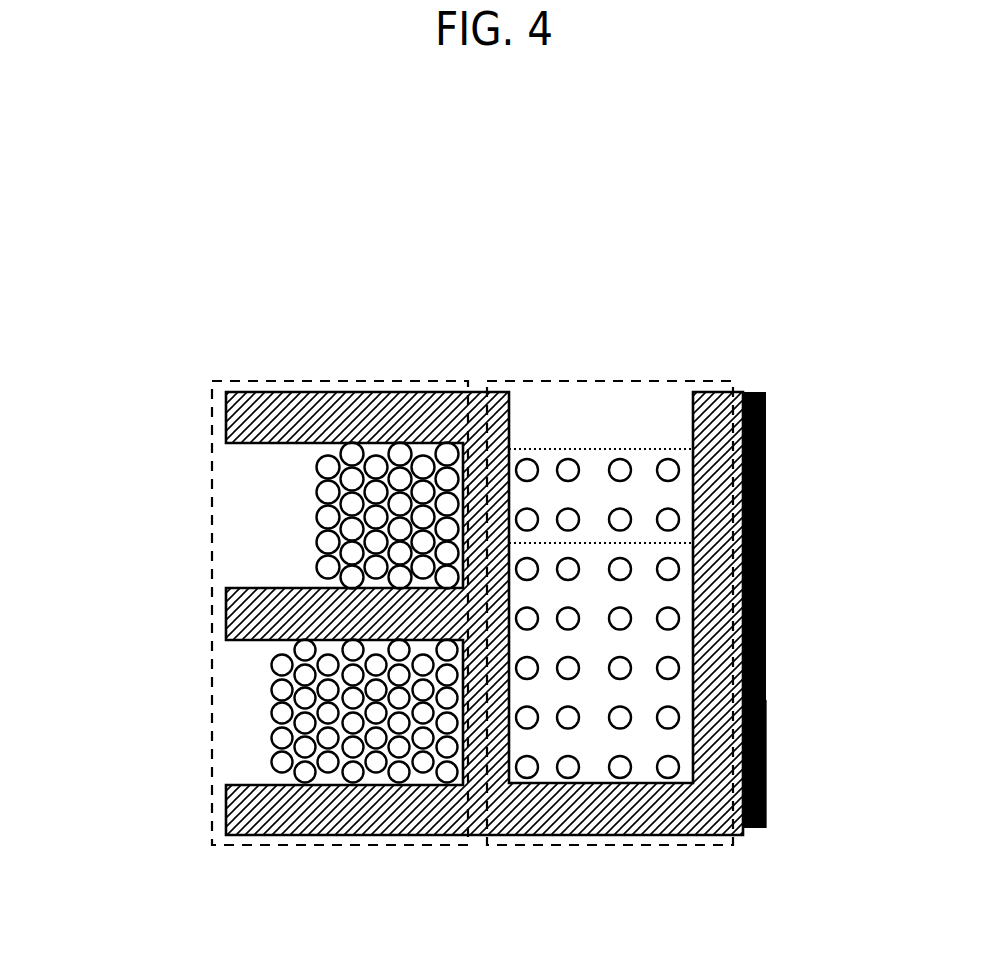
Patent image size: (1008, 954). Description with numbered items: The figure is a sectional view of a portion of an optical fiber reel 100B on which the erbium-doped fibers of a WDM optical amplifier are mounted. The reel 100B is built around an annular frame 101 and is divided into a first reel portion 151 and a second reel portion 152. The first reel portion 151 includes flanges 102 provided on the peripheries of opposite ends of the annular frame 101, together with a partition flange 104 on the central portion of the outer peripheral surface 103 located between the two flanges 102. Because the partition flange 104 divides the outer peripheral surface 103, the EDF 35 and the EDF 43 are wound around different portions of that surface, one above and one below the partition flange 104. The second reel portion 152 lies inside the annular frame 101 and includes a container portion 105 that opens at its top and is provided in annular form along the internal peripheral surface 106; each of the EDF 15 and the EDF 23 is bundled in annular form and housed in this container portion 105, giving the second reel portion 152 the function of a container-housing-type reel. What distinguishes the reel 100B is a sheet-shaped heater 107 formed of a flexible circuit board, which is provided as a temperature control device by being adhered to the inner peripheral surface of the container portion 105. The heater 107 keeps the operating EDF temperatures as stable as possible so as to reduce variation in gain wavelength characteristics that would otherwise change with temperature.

The optical fiber reel 100B is at (311, 320).
The annular frame 101 is at (508, 425).
The flanges 102 is at (227, 412).
The outer peripheral surface 103 is at (367, 670).
The partition flange 104 is at (227, 610).
The container portion 105 is at (693, 427).
The internal peripheral surface 106 is at (510, 647).
The sheet-shaped heater 107 is at (766, 600).
The EDF 15 is at (608, 447).
The EDF 23 is at (770, 752).
The EDF 35 is at (276, 512).
The EDF 43 is at (242, 720).
The first reel portion 151 is at (242, 845).
The second reel portion 152 is at (708, 845).